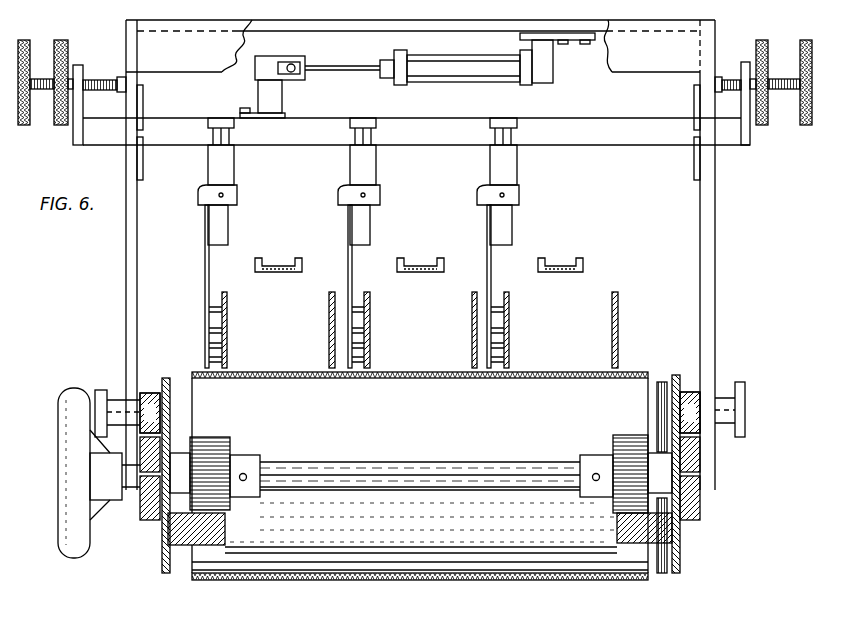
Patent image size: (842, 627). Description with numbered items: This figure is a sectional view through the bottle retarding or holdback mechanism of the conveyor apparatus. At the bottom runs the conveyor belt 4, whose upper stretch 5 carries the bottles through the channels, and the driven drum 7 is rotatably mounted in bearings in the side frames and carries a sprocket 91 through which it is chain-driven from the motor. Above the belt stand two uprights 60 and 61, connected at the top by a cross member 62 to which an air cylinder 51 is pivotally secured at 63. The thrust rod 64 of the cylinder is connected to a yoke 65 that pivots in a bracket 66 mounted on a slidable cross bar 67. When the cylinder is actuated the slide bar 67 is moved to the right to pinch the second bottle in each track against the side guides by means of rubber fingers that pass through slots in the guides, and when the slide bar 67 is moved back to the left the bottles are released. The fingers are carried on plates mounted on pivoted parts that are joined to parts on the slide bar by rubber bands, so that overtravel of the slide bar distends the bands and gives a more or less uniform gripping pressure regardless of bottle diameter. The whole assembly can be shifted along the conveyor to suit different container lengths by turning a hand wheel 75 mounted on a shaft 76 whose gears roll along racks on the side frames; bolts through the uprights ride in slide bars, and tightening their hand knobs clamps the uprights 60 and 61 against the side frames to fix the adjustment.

The conveyor belt 4 is at (420, 580).
The upper stretch of the conveyor belt 5 is at (565, 372).
The driven drum 7 is at (505, 560).
The air cylinder 51 is at (470, 78).
The upright 60 is at (705, 300).
The upright 61 is at (126, 321).
The cross member 62 is at (510, 33).
The pivot 63 is at (548, 78).
The thrust rod 64 is at (365, 70).
The yoke 65 is at (280, 58).
The bracket 66 is at (276, 100).
The slidable cross bar 67 is at (312, 140).
The hand wheel 75 is at (80, 558).
The shaft 76 is at (405, 465).
The sprocket 91 is at (662, 573).